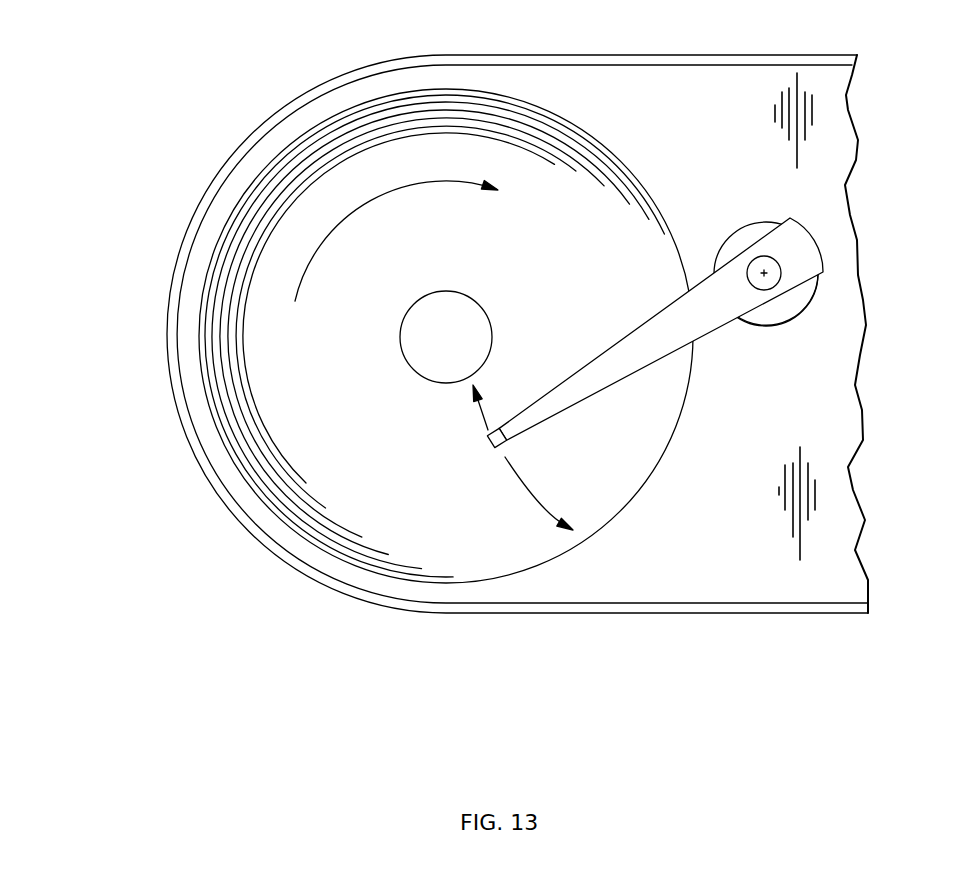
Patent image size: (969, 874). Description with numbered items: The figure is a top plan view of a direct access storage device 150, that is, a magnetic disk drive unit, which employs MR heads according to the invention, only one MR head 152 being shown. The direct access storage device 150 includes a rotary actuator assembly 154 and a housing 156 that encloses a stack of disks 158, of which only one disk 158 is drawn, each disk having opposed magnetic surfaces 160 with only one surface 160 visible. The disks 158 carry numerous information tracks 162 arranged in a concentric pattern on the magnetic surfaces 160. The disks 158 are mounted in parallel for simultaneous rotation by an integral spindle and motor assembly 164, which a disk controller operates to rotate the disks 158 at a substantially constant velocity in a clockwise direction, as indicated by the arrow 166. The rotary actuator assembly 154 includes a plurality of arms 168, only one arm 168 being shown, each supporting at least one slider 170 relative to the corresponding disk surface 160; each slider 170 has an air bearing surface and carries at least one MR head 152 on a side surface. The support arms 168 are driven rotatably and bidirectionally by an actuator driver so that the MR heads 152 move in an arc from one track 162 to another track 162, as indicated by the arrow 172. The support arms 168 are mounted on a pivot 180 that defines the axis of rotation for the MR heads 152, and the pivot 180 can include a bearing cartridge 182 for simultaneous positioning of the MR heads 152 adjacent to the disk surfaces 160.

The direct access storage device 150 is at (140, 193).
The MR head 152 is at (490, 448).
The rotary actuator assembly 154 is at (724, 206).
The housing 156 is at (218, 500).
The disk 158 is at (227, 458).
The magnetic surface 160 is at (258, 400).
The information track 162 is at (312, 173).
The integral spindle and motor assembly 164 is at (487, 309).
The arrow 166 is at (356, 212).
The arm 168 is at (712, 326).
The slider 170 is at (493, 425).
The arrow 172 is at (538, 507).
The pivot 180 is at (767, 272).
The bearing cartridge 182 is at (793, 318).